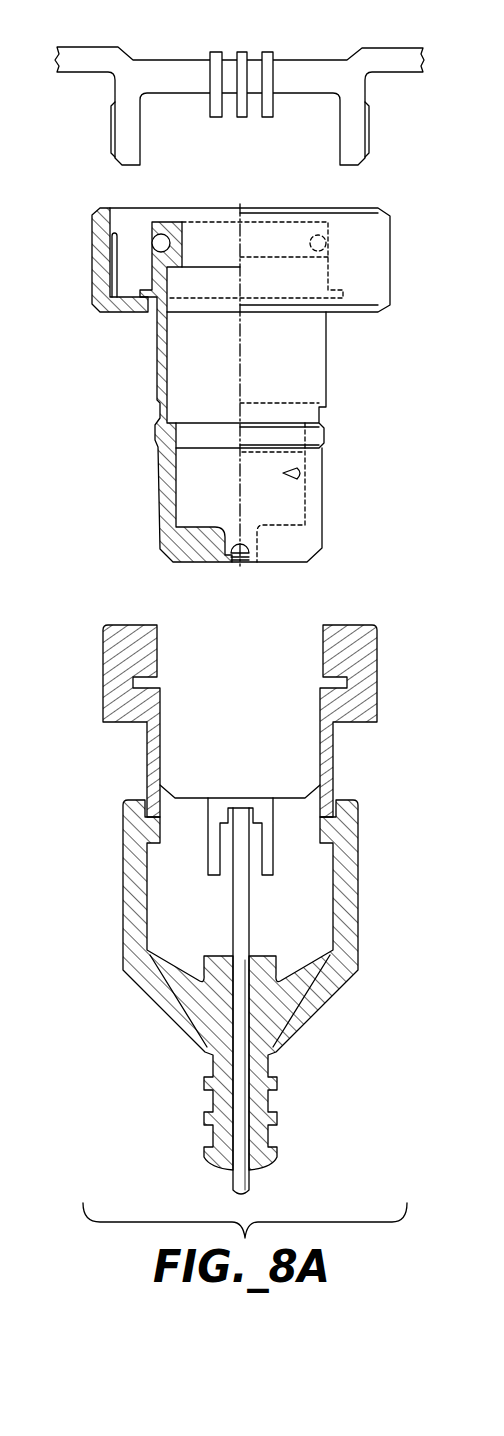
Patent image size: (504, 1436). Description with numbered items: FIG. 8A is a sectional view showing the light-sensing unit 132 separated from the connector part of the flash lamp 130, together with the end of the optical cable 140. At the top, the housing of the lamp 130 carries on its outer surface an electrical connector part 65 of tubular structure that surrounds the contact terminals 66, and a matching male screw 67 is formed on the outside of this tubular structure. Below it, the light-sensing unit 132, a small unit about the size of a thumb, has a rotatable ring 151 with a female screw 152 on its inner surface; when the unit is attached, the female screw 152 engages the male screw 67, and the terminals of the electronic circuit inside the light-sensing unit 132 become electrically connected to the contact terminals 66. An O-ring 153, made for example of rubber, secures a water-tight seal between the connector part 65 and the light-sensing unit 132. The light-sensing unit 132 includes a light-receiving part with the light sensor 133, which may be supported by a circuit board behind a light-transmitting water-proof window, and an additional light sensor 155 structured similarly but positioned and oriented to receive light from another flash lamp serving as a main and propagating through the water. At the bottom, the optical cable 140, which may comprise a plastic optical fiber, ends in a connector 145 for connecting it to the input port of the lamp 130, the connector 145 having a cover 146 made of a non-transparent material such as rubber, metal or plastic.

The lamp 130 is at (172, 40).
The electrical connector part 65 is at (389, 134).
The male screw 67 is at (108, 127).
The contact terminals 66 is at (216, 117).
The rotatable ring 151 is at (93, 262).
The female screw 152 is at (118, 238).
The O-ring 153 is at (153, 247).
The light-sensing unit 132 is at (124, 420).
The additional light sensor 155 is at (297, 473).
The light sensor 133 is at (250, 550).
The cover 146 is at (378, 716).
The connector 145 is at (129, 1051).
The optical cable 140 is at (252, 1178).